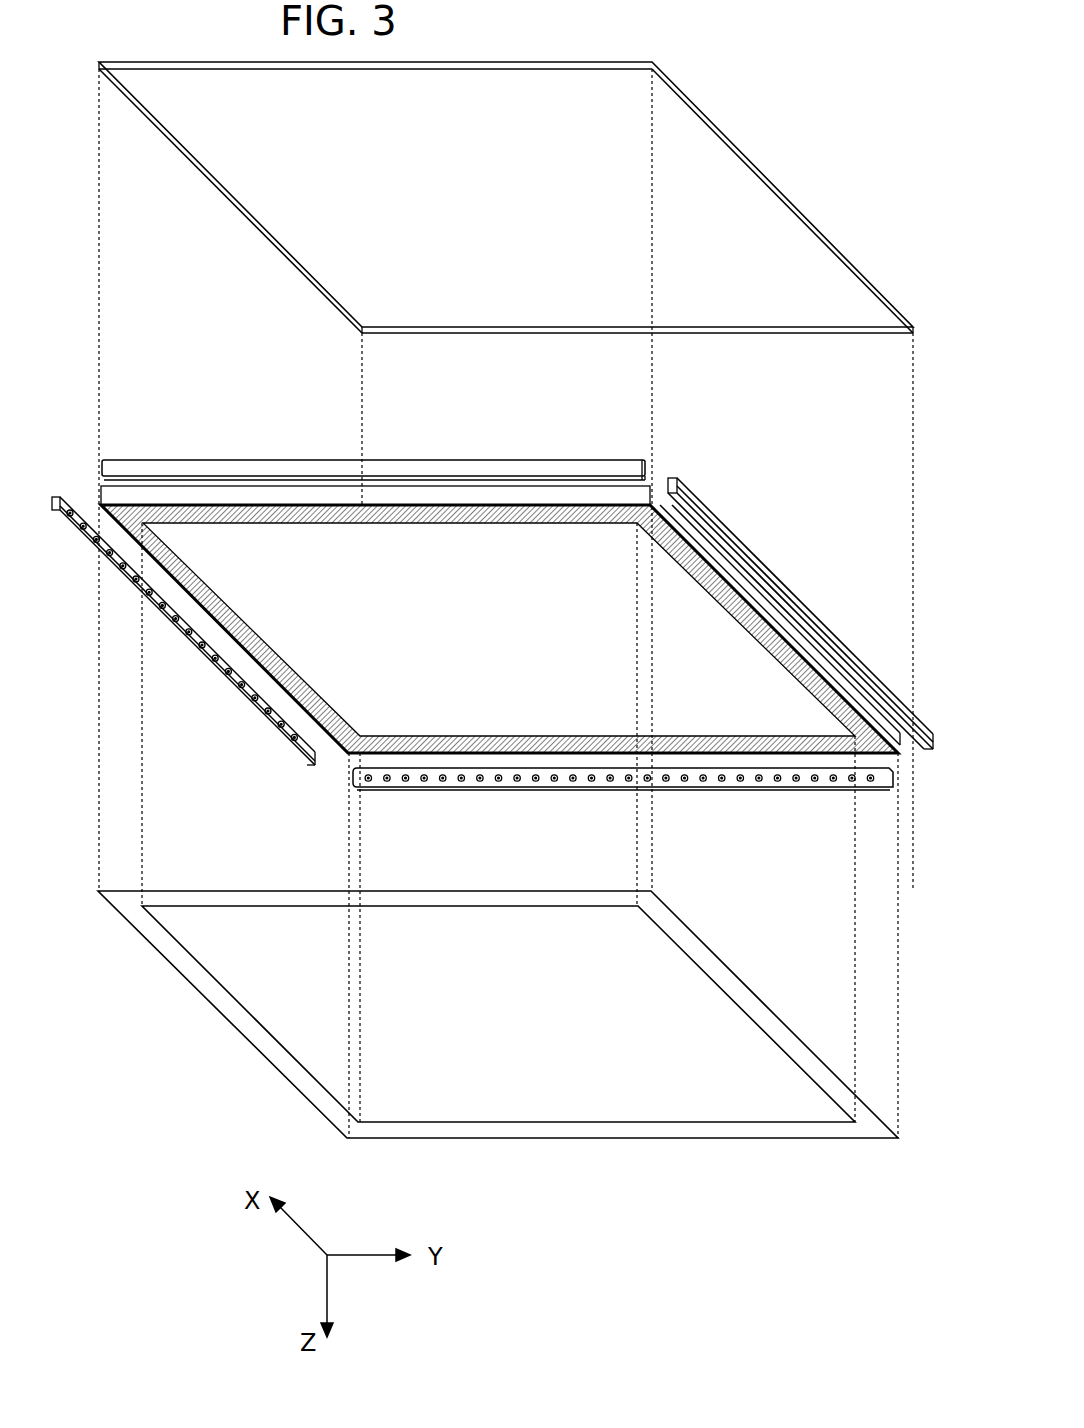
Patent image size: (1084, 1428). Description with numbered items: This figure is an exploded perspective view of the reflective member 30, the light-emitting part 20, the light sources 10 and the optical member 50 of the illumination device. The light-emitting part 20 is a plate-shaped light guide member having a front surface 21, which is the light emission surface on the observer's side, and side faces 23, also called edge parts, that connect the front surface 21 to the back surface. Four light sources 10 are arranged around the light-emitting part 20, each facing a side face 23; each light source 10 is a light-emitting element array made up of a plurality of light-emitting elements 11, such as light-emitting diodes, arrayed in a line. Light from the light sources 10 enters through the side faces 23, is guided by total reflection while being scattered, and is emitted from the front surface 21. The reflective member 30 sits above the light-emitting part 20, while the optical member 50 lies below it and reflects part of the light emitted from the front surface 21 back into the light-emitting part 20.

The light source 10 is at (53, 497).
The light-emitting element 11 is at (313, 766).
The light-emitting part 20 is at (460, 488).
The front surface 21 is at (707, 618).
The side face 23 is at (692, 535).
The reflective member 30 is at (774, 187).
The optical member 50 is at (640, 1142).